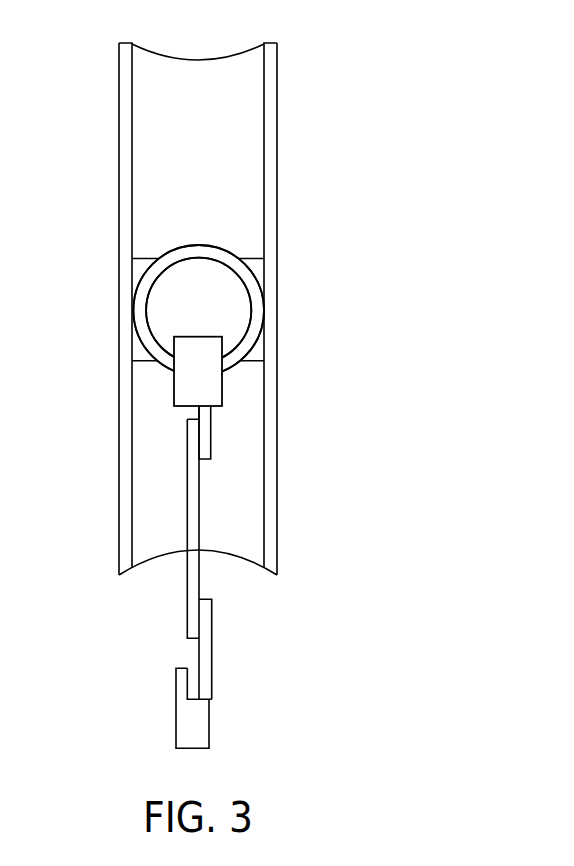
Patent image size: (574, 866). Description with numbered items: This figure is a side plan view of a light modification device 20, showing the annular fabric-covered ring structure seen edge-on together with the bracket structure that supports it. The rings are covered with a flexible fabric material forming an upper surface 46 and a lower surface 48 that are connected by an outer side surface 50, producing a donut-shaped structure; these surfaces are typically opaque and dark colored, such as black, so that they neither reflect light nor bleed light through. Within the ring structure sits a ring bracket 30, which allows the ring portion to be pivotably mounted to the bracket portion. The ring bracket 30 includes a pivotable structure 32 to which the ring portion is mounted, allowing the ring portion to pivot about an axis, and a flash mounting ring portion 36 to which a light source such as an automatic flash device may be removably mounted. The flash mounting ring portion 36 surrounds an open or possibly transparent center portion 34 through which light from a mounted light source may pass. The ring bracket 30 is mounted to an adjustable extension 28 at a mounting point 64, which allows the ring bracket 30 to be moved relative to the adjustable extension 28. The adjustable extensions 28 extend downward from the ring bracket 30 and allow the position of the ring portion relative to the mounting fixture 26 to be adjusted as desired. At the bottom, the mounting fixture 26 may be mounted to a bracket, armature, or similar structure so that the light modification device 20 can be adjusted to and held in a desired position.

The light modification device 20 is at (420, 178).
The mounting fixture 26 is at (209, 727).
The adjustable extension 28 is at (200, 502).
The ring bracket 30 is at (173, 407).
The pivotable structure 32 is at (252, 268).
The center portion 34 is at (158, 327).
The flash mounting ring portion 36 is at (152, 266).
The upper surface 46 is at (278, 91).
The lower surface 48 is at (118, 91).
The outer side surface 50 is at (186, 59).
The mounting point 64 is at (212, 440).